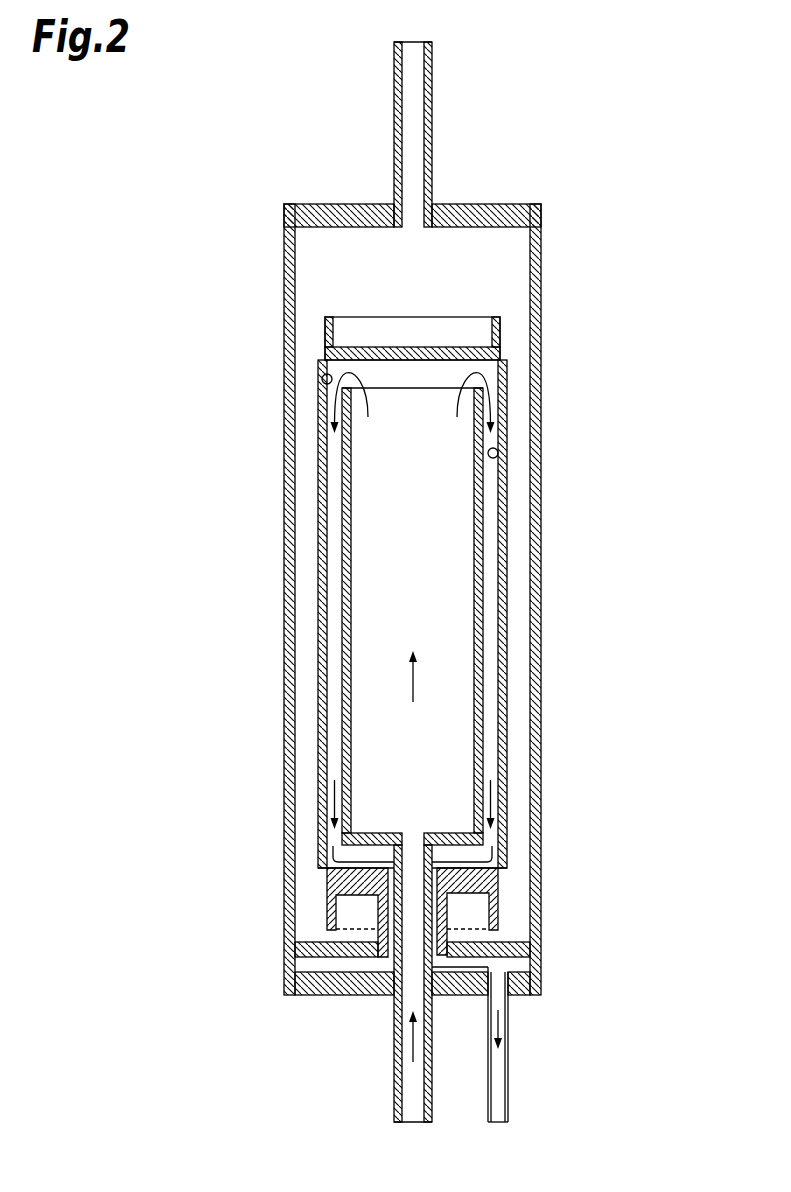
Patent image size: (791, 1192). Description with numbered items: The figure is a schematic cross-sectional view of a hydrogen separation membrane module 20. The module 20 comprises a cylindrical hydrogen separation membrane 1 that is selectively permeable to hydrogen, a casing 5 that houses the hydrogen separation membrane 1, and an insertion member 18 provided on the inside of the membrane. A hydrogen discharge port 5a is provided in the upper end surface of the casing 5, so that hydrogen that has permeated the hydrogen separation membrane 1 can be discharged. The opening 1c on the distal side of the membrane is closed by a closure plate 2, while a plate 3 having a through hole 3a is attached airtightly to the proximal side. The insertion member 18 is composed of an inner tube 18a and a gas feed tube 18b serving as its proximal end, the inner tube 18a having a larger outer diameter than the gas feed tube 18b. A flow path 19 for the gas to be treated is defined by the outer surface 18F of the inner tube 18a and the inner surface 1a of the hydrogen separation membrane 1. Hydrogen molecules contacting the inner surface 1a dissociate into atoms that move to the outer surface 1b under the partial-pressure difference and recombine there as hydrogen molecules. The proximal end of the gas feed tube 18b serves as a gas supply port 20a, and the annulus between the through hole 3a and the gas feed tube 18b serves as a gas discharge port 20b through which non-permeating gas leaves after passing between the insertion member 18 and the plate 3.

The module 20 is at (665, 83).
The casing 5 is at (535, 553).
The hydrogen discharge port 5a is at (414, 228).
The closure plate 2 is at (457, 346).
The hydrogen separation membrane 1 is at (507, 387).
The inner surface 1a is at (499, 461).
The outer surface 1b is at (505, 432).
The opening 1c is at (322, 380).
The flow path 19 is at (490, 507).
The insertion member 18 is at (492, 675).
The inner tube 18a is at (342, 640).
The outer surface 18F is at (486, 628).
The gas feed tube 18b is at (437, 853).
The plate 3 is at (490, 885).
The through hole 3a is at (385, 927).
The gas supply port 20a is at (428, 1122).
The gas discharge port 20b is at (393, 866).